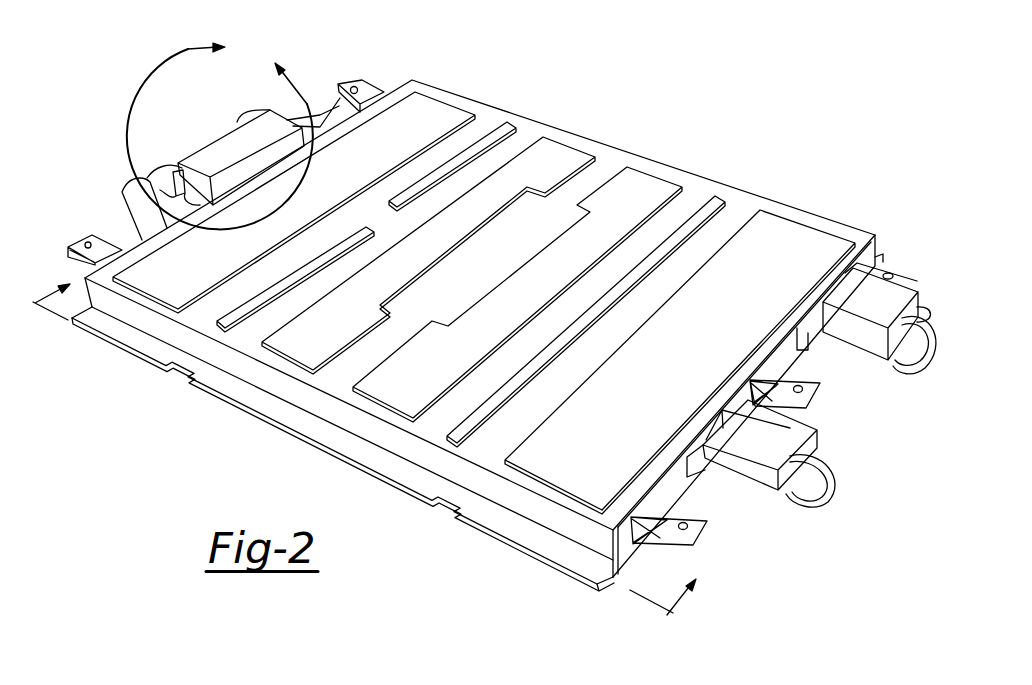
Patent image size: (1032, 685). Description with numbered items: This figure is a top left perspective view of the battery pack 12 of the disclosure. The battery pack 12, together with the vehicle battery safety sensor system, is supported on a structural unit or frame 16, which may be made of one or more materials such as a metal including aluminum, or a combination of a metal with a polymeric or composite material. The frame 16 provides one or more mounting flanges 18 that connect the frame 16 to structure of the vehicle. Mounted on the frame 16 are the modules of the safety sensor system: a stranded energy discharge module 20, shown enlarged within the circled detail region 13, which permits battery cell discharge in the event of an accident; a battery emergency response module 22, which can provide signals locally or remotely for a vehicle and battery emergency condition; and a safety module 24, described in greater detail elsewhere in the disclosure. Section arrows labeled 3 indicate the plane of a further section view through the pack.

The battery pack 12 is at (502, 335).
The enlarged detail region 13 is at (220, 132).
The frame 16 is at (632, 546).
The mounting flange 18 is at (160, 350).
The stranded energy discharge module 20 is at (208, 158).
The battery emergency response module 22 is at (910, 294).
The safety module 24 is at (793, 443).
The section line 3- 3 is at (359, 469).